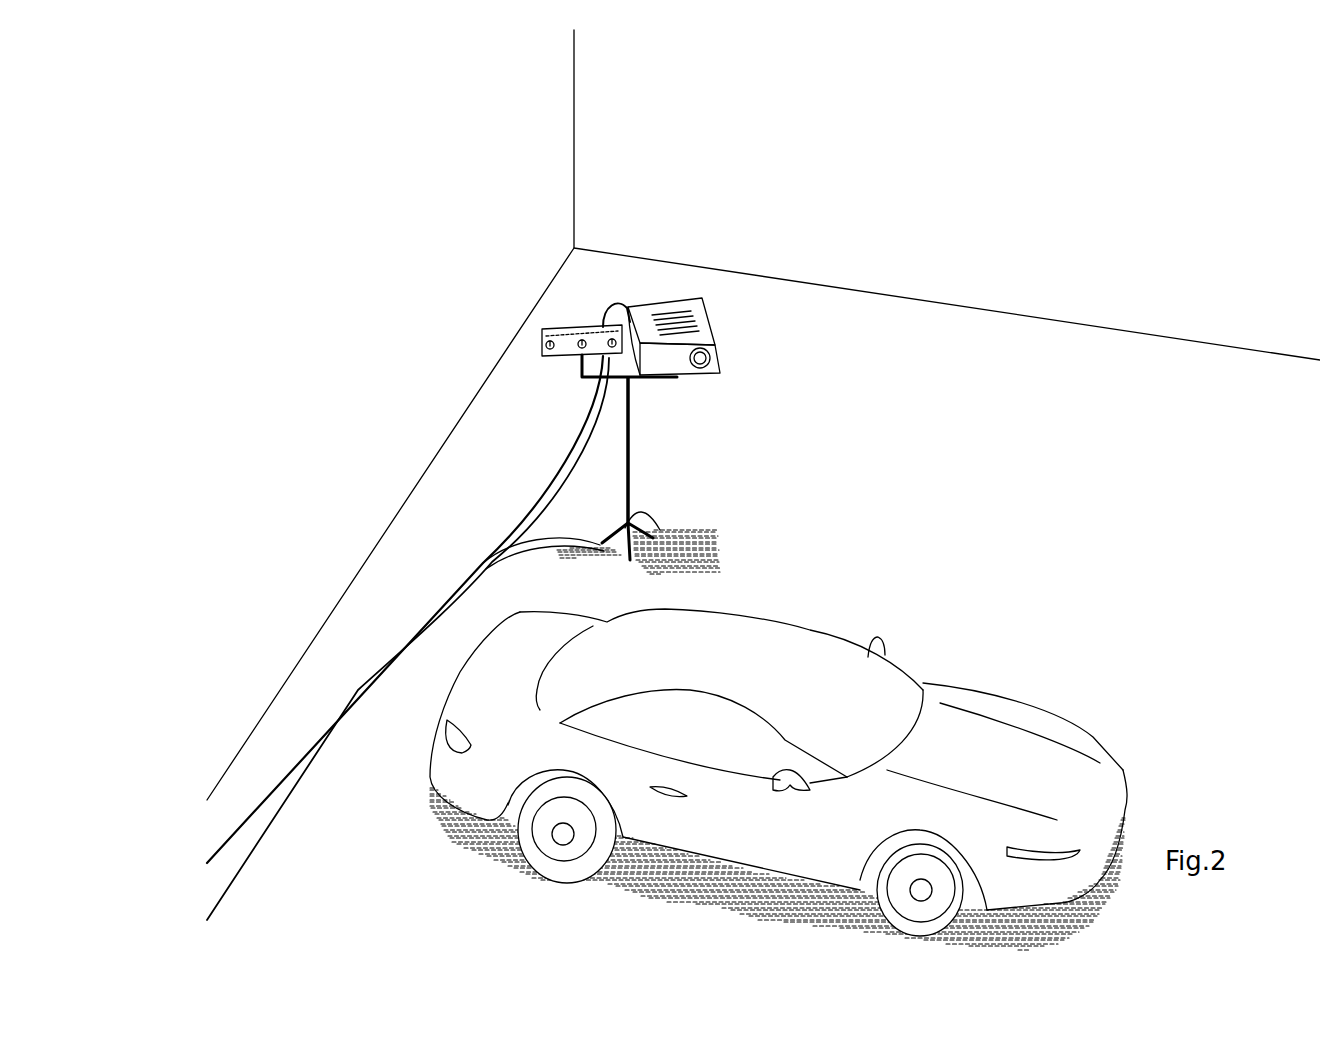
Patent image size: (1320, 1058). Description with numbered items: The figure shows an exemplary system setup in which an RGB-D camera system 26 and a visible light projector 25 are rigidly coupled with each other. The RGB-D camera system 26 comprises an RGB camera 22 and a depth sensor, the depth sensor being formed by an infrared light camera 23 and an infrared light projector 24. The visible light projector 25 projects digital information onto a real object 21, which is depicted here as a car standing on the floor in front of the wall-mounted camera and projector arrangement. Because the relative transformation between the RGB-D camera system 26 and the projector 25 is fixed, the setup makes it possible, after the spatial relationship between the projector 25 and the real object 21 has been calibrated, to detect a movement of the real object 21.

The real object 21 is at (840, 697).
The RGB camera 22 is at (548, 330).
The infrared light camera 23 is at (583, 330).
The infrared light projector 24 is at (619, 306).
The visible light projector 25 is at (700, 305).
The RGB-D camera system 26 is at (563, 330).